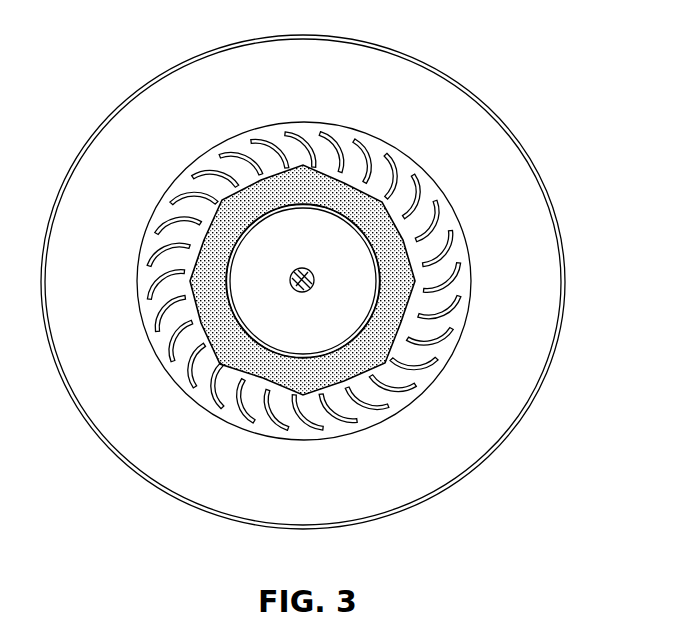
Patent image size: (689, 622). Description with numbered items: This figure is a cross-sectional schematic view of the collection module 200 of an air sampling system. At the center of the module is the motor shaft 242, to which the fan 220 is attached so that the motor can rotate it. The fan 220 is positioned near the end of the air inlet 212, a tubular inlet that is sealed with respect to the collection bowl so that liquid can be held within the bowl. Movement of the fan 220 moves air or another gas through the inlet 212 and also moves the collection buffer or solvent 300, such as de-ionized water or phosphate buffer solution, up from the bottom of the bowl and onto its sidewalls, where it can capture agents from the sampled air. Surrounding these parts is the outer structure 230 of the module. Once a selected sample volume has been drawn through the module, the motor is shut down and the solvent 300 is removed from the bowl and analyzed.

The collection module 200 is at (496, 66).
The fan housing / shroud 230 is at (329, 282).
The fan 220 is at (152, 243).
The collection buffer or solvent 300 is at (376, 208).
The air inlet 212 is at (284, 333).
The motor shaft 242 is at (314, 285).